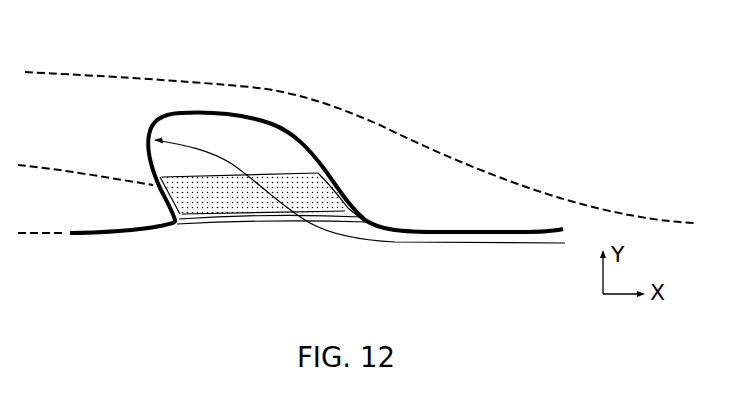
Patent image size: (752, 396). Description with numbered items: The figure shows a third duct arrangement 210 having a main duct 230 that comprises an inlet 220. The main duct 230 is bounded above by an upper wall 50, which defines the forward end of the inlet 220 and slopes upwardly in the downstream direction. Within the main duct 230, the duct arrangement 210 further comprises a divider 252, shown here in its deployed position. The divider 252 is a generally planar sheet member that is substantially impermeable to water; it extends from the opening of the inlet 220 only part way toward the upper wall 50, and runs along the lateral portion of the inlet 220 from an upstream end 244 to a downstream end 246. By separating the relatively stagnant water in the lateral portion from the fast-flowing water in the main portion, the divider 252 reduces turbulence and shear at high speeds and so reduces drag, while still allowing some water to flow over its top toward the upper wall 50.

The main duct 230 is at (121, 117).
The upper wall 50 is at (253, 116).
The third duct arrangement 210 is at (416, 80).
The divider 252 is at (307, 189).
The upstream end 244 is at (345, 198).
The downstream end 246 is at (167, 205).
The inlet 220 is at (361, 265).